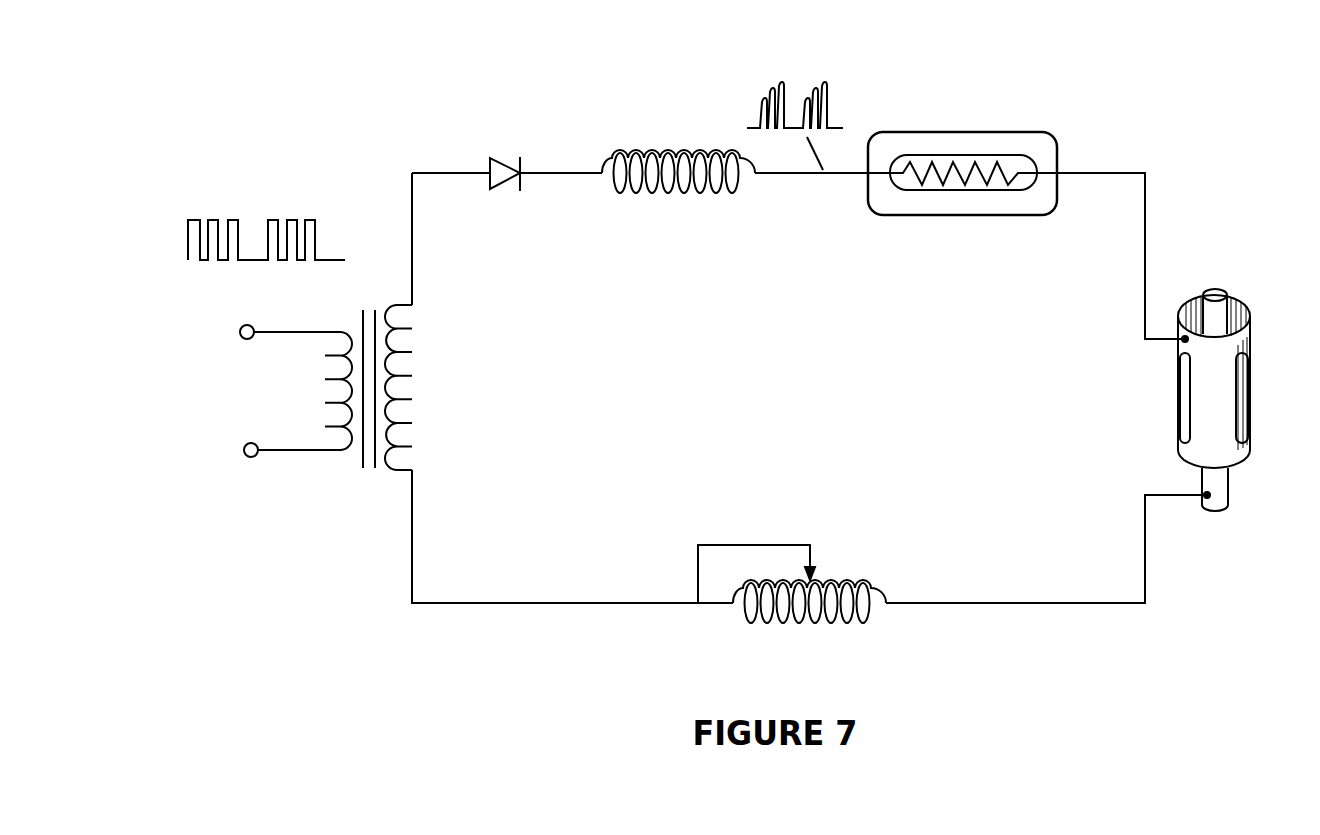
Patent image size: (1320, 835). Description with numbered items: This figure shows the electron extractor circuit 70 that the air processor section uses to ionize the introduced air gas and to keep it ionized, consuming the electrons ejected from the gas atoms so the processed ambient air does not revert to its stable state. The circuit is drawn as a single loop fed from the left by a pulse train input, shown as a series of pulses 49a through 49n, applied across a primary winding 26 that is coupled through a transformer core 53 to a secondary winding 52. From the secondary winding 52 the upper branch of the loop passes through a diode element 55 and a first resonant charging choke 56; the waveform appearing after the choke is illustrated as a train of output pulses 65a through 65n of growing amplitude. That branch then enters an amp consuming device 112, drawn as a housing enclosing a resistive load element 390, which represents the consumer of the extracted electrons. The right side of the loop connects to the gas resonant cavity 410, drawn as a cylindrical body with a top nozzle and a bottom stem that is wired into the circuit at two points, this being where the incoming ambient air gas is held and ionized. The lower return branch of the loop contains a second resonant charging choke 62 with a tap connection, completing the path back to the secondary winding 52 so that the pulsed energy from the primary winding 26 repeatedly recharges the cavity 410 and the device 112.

The transformer primary winding 26 is at (325, 388).
The input pulse train (first pulse) 49a is at (266, 251).
The input pulse train (nth pulse) 49n is at (282, 325).
The transformer secondary winding 52 is at (420, 433).
The transformer core 53 is at (357, 465).
The terminal 55 is at (497, 162).
The resonant charging choke 56 is at (630, 147).
The resonant charging choke 62 is at (857, 573).
The output pulse (first) 65a is at (767, 94).
The output pulse (nth) 65n is at (775, 78).
The pulse charging circuit 70 is at (733, 352).
The amp consuming device 112 is at (1023, 127).
The load resistor 390 is at (922, 113).
The gas resonant cavity 410 is at (1199, 397).